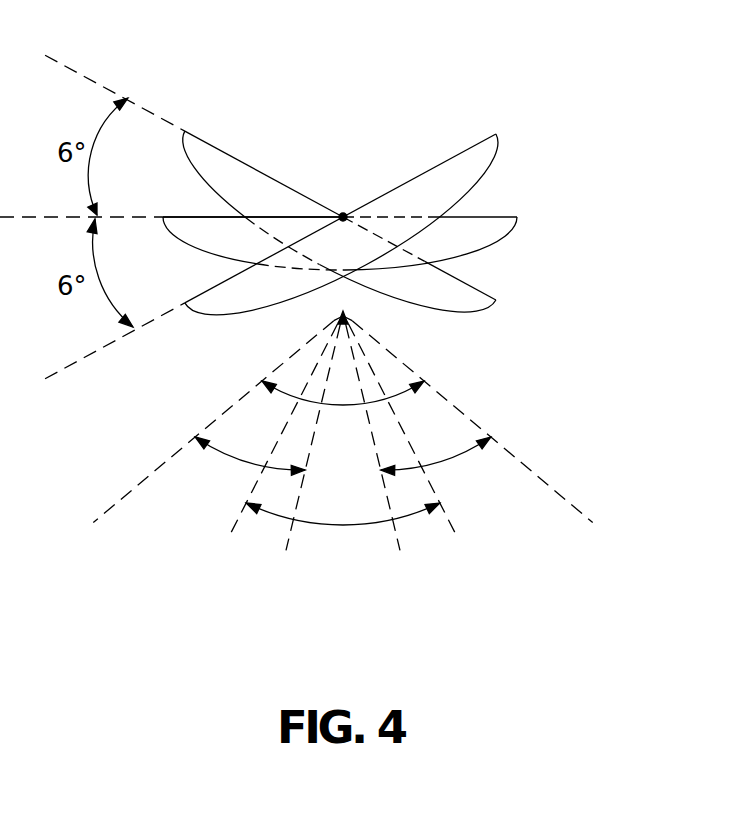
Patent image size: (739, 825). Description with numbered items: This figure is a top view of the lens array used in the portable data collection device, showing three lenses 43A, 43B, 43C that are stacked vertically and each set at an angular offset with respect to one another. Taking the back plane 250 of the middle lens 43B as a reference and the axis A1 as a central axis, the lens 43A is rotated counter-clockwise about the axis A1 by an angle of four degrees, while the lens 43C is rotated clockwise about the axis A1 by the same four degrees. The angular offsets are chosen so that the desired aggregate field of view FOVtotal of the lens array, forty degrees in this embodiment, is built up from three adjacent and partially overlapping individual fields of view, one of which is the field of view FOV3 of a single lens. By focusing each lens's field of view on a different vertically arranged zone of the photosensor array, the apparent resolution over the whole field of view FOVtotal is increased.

The back plane 250 is at (280, 217).
The axis A1 is at (343, 217).
The lens 43A is at (447, 160).
The lens 43B is at (482, 217).
The lens 43C is at (463, 282).
The aggregate field of view FOVtotal is at (367, 400).
The field of view FOV3 is at (227, 463).